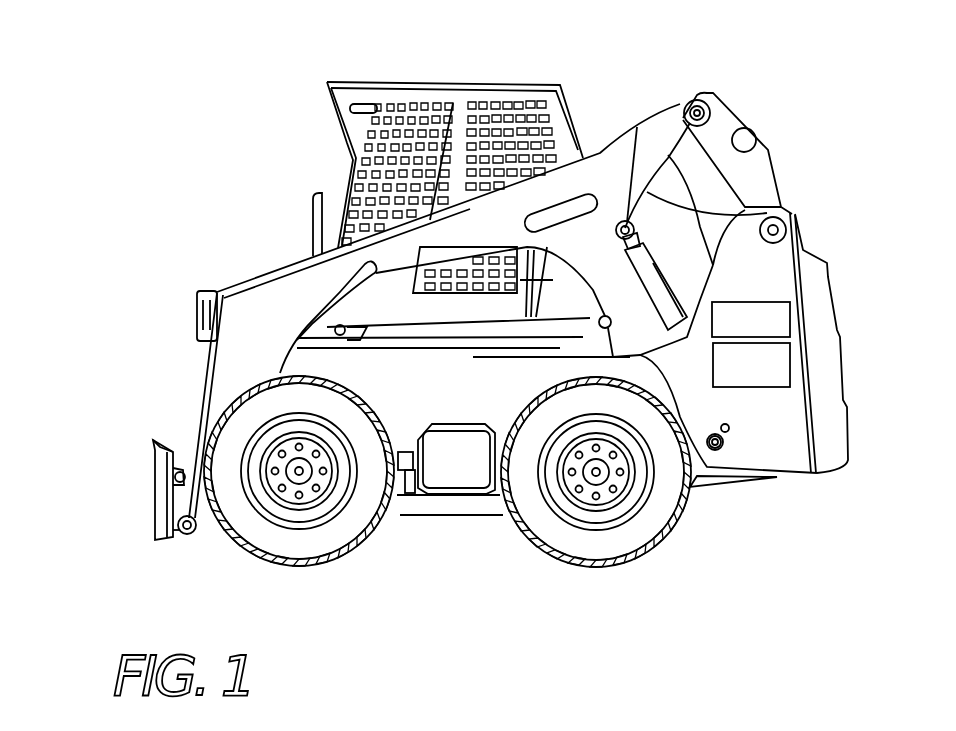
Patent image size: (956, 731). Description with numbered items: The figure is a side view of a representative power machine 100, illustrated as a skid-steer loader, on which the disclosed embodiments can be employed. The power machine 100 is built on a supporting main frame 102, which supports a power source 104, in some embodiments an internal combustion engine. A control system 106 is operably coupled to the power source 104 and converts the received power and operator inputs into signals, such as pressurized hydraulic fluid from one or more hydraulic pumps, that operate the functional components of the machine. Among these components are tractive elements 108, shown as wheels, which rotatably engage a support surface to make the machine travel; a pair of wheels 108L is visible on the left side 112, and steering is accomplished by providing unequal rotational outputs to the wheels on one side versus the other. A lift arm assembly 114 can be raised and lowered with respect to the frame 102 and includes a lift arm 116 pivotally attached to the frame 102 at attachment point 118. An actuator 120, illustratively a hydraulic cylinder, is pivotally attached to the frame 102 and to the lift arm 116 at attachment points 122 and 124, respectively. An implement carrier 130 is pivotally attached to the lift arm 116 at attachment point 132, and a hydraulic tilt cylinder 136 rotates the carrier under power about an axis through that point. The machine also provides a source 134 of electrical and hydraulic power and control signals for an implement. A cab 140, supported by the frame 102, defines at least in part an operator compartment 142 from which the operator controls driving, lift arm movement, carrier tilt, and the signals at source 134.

The power machine 100 is at (203, 122).
The main frame 102 is at (402, 508).
The power source 104 is at (765, 338).
The control system 106 is at (765, 382).
The tractive elements 108 is at (263, 557).
The wheels on the left side 108L is at (290, 573).
The left side 112 is at (733, 520).
The lift arm assembly 114 is at (657, 93).
The lift arm 116 is at (301, 292).
The attachment point 118 is at (782, 215).
The actuator 120 is at (732, 162).
The attachment point 122 is at (716, 450).
The attachment point 124 is at (637, 127).
The implement carrier 130 is at (153, 478).
The attachment point 132 is at (186, 540).
The source of power and control signals 134 is at (205, 293).
The hydraulic tilt cylinder 136 is at (183, 470).
The cab 140 is at (448, 78).
The operator compartment 142 is at (300, 178).